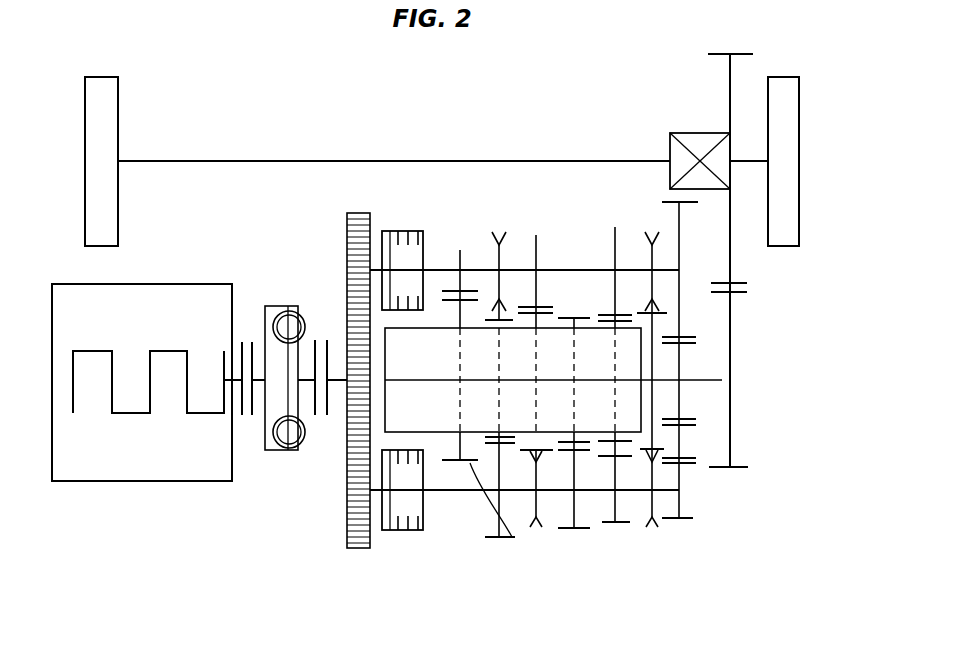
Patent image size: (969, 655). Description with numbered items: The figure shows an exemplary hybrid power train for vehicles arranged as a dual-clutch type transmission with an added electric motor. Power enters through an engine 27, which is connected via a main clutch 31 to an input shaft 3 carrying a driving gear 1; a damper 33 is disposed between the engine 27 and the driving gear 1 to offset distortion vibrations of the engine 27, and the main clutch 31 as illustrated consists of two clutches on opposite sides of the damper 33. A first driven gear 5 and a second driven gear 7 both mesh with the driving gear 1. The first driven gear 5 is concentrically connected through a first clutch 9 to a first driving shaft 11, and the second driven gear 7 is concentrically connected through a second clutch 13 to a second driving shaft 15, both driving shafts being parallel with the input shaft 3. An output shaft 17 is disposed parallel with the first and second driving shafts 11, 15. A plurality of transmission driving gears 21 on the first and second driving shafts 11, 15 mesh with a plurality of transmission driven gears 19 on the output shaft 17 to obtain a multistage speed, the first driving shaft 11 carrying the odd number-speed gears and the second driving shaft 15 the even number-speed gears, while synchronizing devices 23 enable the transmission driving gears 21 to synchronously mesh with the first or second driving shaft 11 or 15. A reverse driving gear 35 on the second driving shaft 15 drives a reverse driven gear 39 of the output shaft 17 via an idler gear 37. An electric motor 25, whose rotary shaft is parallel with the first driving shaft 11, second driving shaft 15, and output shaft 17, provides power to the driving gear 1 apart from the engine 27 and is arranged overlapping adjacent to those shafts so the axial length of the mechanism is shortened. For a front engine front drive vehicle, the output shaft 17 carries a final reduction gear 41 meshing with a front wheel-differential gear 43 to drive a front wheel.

The driving gear 1 is at (347, 345).
The input shaft 3 is at (341, 405).
The first driven gear 5 is at (355, 213).
The second driven gear 7 is at (355, 540).
The first clutch 9 is at (403, 231).
The first driving shaft 11 is at (570, 268).
The second clutch 13 is at (407, 527).
The second driving shaft 15 is at (467, 490).
The output shaft 17 is at (702, 382).
The transmission driven gears 19 is at (485, 313).
The transmission driving gears 21 is at (460, 250).
The synchronizing devices 23 is at (502, 223).
The electric motor 25 is at (435, 422).
The engine 27 is at (102, 477).
The main clutch 31 is at (252, 342).
The damper 33 is at (280, 305).
The reverse driving gear 35 is at (693, 520).
The idler gear 37 is at (688, 426).
The reverse driven gear 39 is at (688, 344).
The final reduction gear 41 is at (740, 293).
The front wheel-differential gear 43 is at (697, 140).